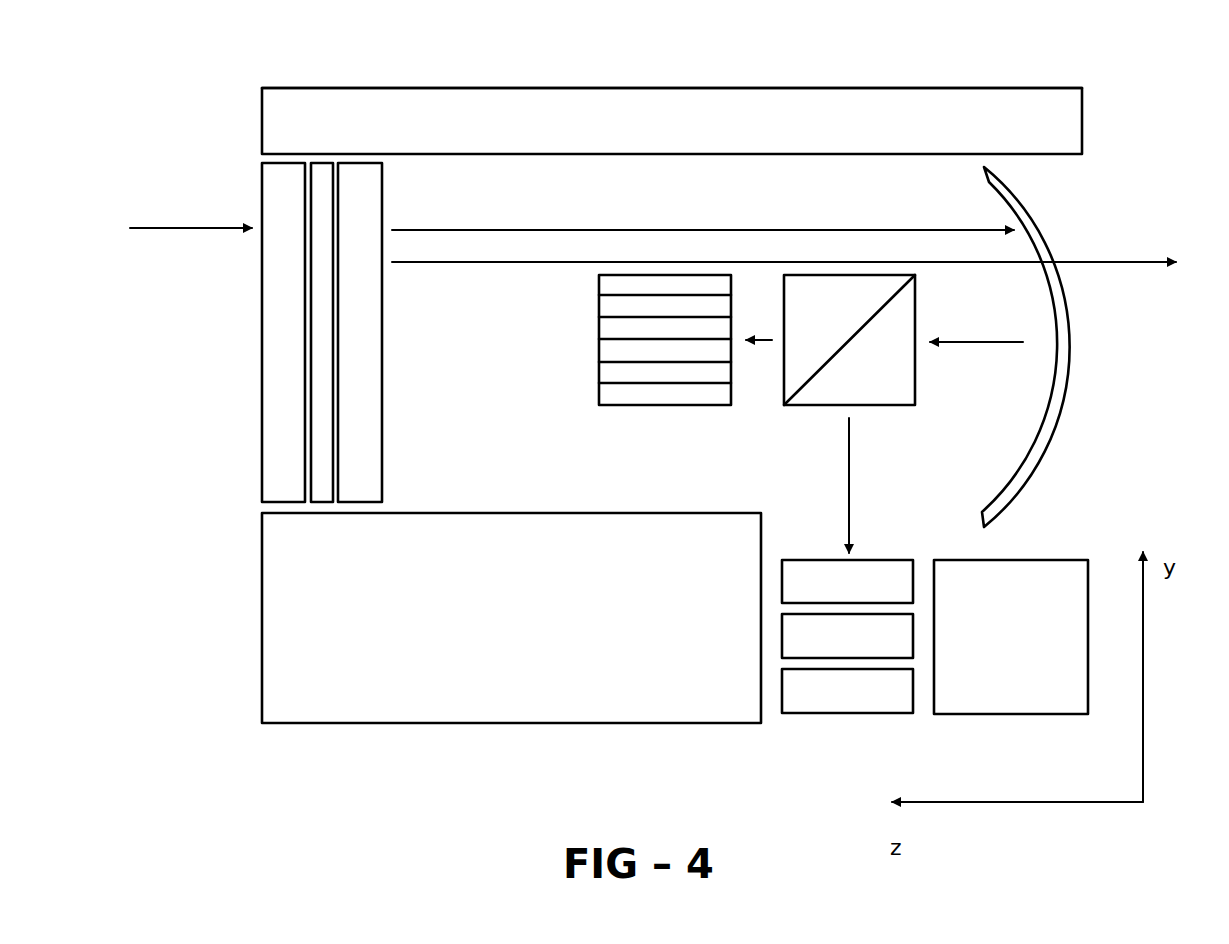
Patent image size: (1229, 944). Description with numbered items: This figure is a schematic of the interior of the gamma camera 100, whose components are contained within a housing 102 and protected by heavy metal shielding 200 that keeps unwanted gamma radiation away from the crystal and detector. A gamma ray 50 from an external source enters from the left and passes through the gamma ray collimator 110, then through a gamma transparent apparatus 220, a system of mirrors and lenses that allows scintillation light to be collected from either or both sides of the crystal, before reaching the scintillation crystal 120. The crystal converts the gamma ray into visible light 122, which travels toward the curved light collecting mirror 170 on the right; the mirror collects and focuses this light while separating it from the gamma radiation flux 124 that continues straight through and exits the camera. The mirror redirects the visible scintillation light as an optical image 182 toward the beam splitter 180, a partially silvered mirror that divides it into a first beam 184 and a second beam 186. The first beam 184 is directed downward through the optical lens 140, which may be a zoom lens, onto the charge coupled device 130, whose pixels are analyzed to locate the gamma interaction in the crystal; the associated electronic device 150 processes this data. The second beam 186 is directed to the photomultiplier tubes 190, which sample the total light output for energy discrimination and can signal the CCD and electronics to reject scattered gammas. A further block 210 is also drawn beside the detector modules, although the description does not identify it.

The gamma camera 100 is at (1142, 92).
The housing 102 is at (648, 106).
The shielding 200 is at (848, 105).
The gamma ray 50 is at (152, 228).
The gamma ray collimator 110 is at (276, 318).
The gamma transparent apparatus 220 is at (320, 364).
The scintillation crystal 120 is at (362, 460).
The visible light 122 is at (505, 222).
The gamma radiation flux 124 is at (1118, 268).
The light collecting mirror 170 is at (1037, 220).
The beam splitter 180 is at (905, 386).
The optical image 182 is at (968, 340).
The first beam 184 is at (851, 478).
The second beam 186 is at (766, 346).
The photomultiplier tubes 190 is at (618, 416).
The optical lens 140 is at (810, 584).
The charge coupled device 130 is at (810, 638).
The electronic device 150 is at (812, 694).
The electronics module 210 is at (1045, 578).